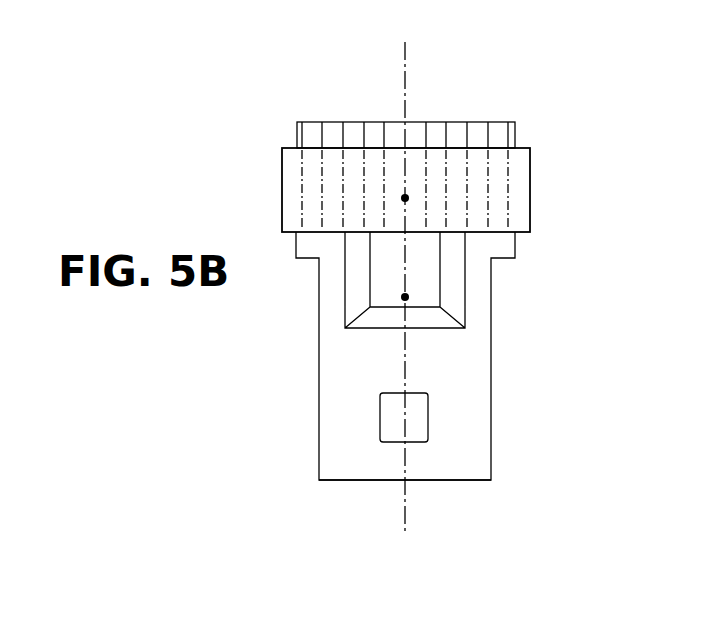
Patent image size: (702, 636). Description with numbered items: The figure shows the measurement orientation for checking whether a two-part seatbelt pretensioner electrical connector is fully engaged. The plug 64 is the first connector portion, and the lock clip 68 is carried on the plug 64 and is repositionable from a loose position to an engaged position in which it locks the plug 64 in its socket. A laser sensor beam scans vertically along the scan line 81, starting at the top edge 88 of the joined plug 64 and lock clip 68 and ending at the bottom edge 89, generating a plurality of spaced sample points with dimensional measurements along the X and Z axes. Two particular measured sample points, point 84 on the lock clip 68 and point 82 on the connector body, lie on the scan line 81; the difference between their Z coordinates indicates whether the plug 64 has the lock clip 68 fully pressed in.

The scan line 81 is at (408, 72).
The top edge 88 is at (460, 121).
The lock clip 68 is at (517, 160).
The measured sample point 84 is at (390, 198).
The measured sample point 82 is at (390, 297).
The plug 64 is at (413, 353).
The bottom edge 89 is at (432, 480).